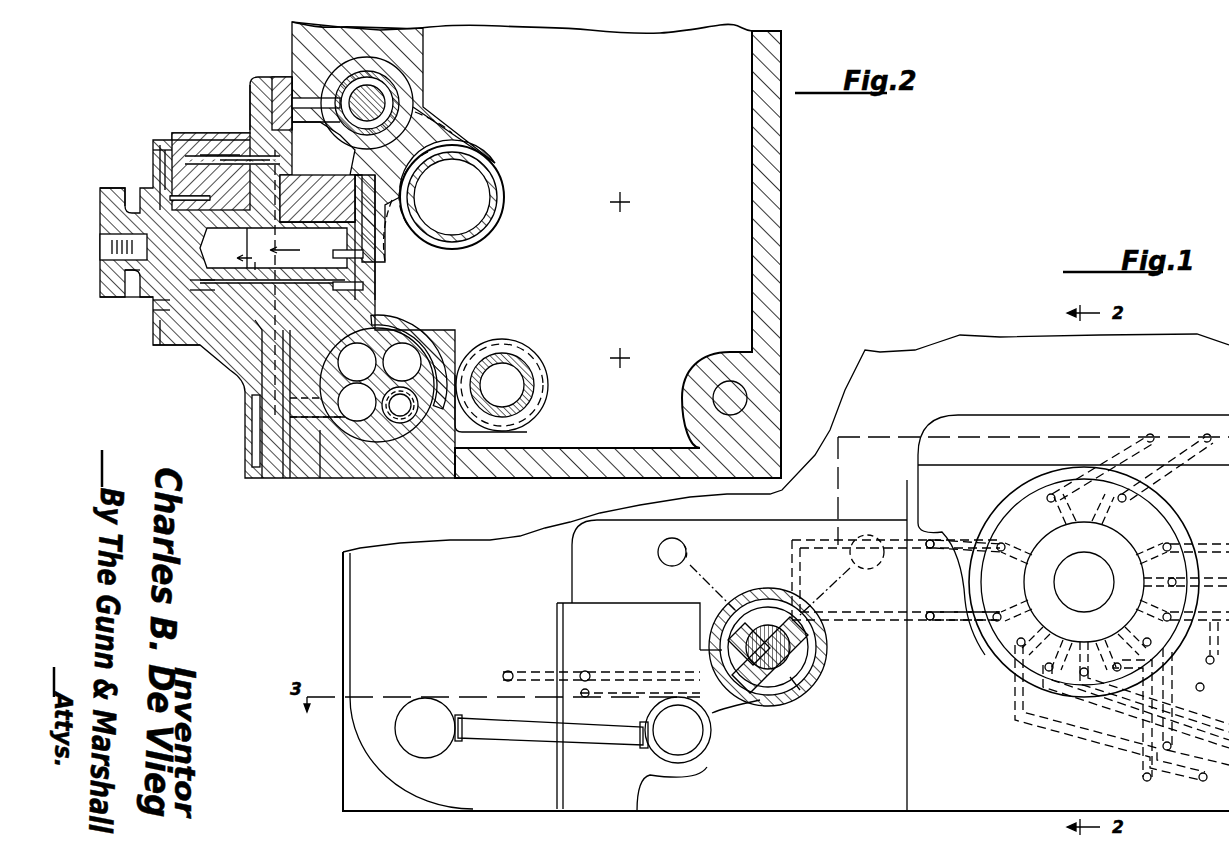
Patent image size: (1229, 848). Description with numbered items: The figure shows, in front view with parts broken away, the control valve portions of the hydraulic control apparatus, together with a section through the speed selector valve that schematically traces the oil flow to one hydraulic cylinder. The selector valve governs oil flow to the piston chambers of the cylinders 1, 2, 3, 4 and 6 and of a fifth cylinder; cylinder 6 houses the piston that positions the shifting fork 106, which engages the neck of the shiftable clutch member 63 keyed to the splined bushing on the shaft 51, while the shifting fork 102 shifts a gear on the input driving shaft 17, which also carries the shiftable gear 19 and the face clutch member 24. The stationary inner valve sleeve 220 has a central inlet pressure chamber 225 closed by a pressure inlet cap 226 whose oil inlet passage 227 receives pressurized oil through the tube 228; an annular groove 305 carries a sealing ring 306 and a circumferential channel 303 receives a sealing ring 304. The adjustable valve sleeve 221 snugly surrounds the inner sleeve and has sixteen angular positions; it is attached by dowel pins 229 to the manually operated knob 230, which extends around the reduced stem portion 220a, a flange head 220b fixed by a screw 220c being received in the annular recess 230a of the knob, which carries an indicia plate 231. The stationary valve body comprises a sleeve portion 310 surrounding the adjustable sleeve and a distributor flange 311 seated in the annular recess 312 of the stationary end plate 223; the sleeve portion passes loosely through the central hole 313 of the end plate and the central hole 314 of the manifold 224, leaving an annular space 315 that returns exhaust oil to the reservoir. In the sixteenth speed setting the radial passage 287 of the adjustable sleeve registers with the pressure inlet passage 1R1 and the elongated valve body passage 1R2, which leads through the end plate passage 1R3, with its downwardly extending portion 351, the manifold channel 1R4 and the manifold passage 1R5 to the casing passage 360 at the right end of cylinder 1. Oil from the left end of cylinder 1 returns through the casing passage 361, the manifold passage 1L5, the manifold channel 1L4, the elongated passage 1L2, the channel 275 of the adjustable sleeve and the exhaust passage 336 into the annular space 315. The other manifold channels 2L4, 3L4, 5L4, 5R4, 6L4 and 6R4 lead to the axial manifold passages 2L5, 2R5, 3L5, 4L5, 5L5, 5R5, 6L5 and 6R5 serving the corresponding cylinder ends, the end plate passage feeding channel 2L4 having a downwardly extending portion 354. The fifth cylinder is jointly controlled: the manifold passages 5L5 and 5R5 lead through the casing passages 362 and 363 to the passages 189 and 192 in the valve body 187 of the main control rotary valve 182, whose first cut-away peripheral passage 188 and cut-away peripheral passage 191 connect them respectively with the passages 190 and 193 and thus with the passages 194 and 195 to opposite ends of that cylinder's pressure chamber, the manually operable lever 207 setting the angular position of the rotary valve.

In FIG. 2, the cylinder 1 is at (356, 421).
In FIG. 2, the cylinder 2 is at (400, 423).
In FIG. 2, the cylinder 3 is at (430, 338).
In FIG. 2, the cylinder 4 is at (362, 344).
In FIG. 2, the cylinder 6 is at (385, 90).
In FIG. 2, the input driving shaft 17 is at (520, 383).
In FIG. 2, the shiftable gear 19 is at (526, 377).
In FIG. 2, the face clutch member 24 is at (543, 357).
In FIG. 2, the shaft 51 is at (485, 188).
In FIG. 2, the clutch member 63 is at (505, 201).
In FIG. 2, the shifting fork 102 is at (468, 347).
In FIG. 2, the shifting fork 106 is at (458, 133).
In FIG. 1, the main control rotary valve 182 is at (815, 660).
In FIG. 1, the valve body 187 is at (810, 680).
In FIG. 1, the first cut-away peripheral passage 188 is at (765, 628).
In FIG. 1, the passage 189 is at (792, 615).
In FIG. 1, the passage 190 is at (722, 645).
In FIG. 1, the cut-away peripheral passage 191 is at (790, 692).
In FIG. 1, the passage 192 is at (812, 630).
In FIG. 1, the passage 193 is at (752, 690).
In FIG. 1, the passage 194 is at (618, 670).
In FIG. 1, the passage 195 is at (605, 695).
In FIG. 1, the manually operable lever 207 is at (686, 548).
In FIG. 2, the stationary inner valve sleeve 220 is at (365, 287).
In FIG. 2, the reduced stem portion 220a is at (110, 307).
In FIG. 2, the flange head 220b is at (100, 220).
In FIG. 2, the screw 220c is at (100, 247).
In FIG. 2, the adjustable valve sleeve 221 is at (326, 182).
In FIG. 2, the stationary end plate 223 is at (258, 77).
In FIG. 2, the stationary manifold 224 is at (283, 77).
In FIG. 2, the inlet pressure chamber 225 is at (302, 243).
In FIG. 2, the pressure inlet cap 226 is at (370, 268).
In FIG. 2, the oil inlet passage 227 is at (372, 252).
In FIG. 2, the tube 228 is at (375, 232).
In FIG. 2, the dowel pins 229 is at (170, 198).
In FIG. 2, the manually operated knob 230 is at (94, 294).
In FIG. 2, the annular recess 230a is at (145, 265).
In FIG. 2, the indicia plate 231 is at (150, 344).
In FIG. 2, the channel 275 is at (160, 165).
In FIG. 2, the radial passage 287 is at (236, 285).
In FIG. 2, the circumferential channel 303 is at (160, 301).
In FIG. 2, the sealing ring 304 is at (165, 311).
In FIG. 2, the annular groove 305 is at (200, 280).
In FIG. 2, the sealing ring 306 is at (205, 290).
In FIG. 2, the sleeve portion 310 is at (293, 177).
In FIG. 2, the distributor flange 311 is at (168, 145).
In FIG. 2, the annular recess 312 is at (181, 140).
In FIG. 2, the central hole 313 is at (263, 345).
In FIG. 2, the central hole 314 is at (300, 395).
In FIG. 2, the annular space 315 is at (222, 155).
In FIG. 2, the exhaust passage 336 is at (247, 160).
In FIG. 1, the downwardly extending portion 351 is at (1184, 685).
In FIG. 1, the downwardly extending portion 354 is at (1143, 728).
In FIG. 2, the passage 360 is at (326, 455).
In FIG. 2, the passage 361 is at (318, 395).
In FIG. 1, the passage 362 is at (814, 538).
In FIG. 1, the passage 363 is at (868, 610).
In FIG. 2, the pressure inlet passage 1R1 is at (238, 282).
In FIG. 2, the elongated valve body passage 1R2 is at (163, 345).
In FIG. 2, the end plate passage 1R3 is at (258, 330).
In FIG. 2, the manifold channel 1R4 is at (253, 466).
In FIG. 2, the manifold passage 1R5 is at (300, 470).
In FIG. 2, the elongated passage 1L2 is at (165, 150).
In FIG. 1, the manifold channel 1L4 is at (1175, 724).
In FIG. 1, the manifold passage 1L5 is at (1219, 728).
In FIG. 1, the manifold channel 2L4 is at (1150, 782).
In FIG. 1, the manifold passage 2L5 is at (1203, 782).
In FIG. 1, the manifold passage 2R5 is at (1219, 784).
In FIG. 1, the manifold channel 3L4 is at (1190, 672).
In FIG. 1, the manifold passage 3L5 is at (1212, 656).
In FIG. 1, the manifold passage 4L5 is at (1219, 692).
In FIG. 1, the manifold channel 5L4 is at (962, 540).
In FIG. 1, the manifold passage 5L5 is at (932, 540).
In FIG. 1, the manifold channel 5R4 is at (956, 622).
In FIG. 1, the manifold passage 5R5 is at (930, 622).
In FIG. 1, the manifold channel 6L4 is at (1118, 452).
In FIG. 1, the manifold passage 6L5 is at (1108, 460).
In FIG. 1, the manifold channel 6R4 is at (1180, 463).
In FIG. 1, the manifold passage 6R5 is at (1175, 458).